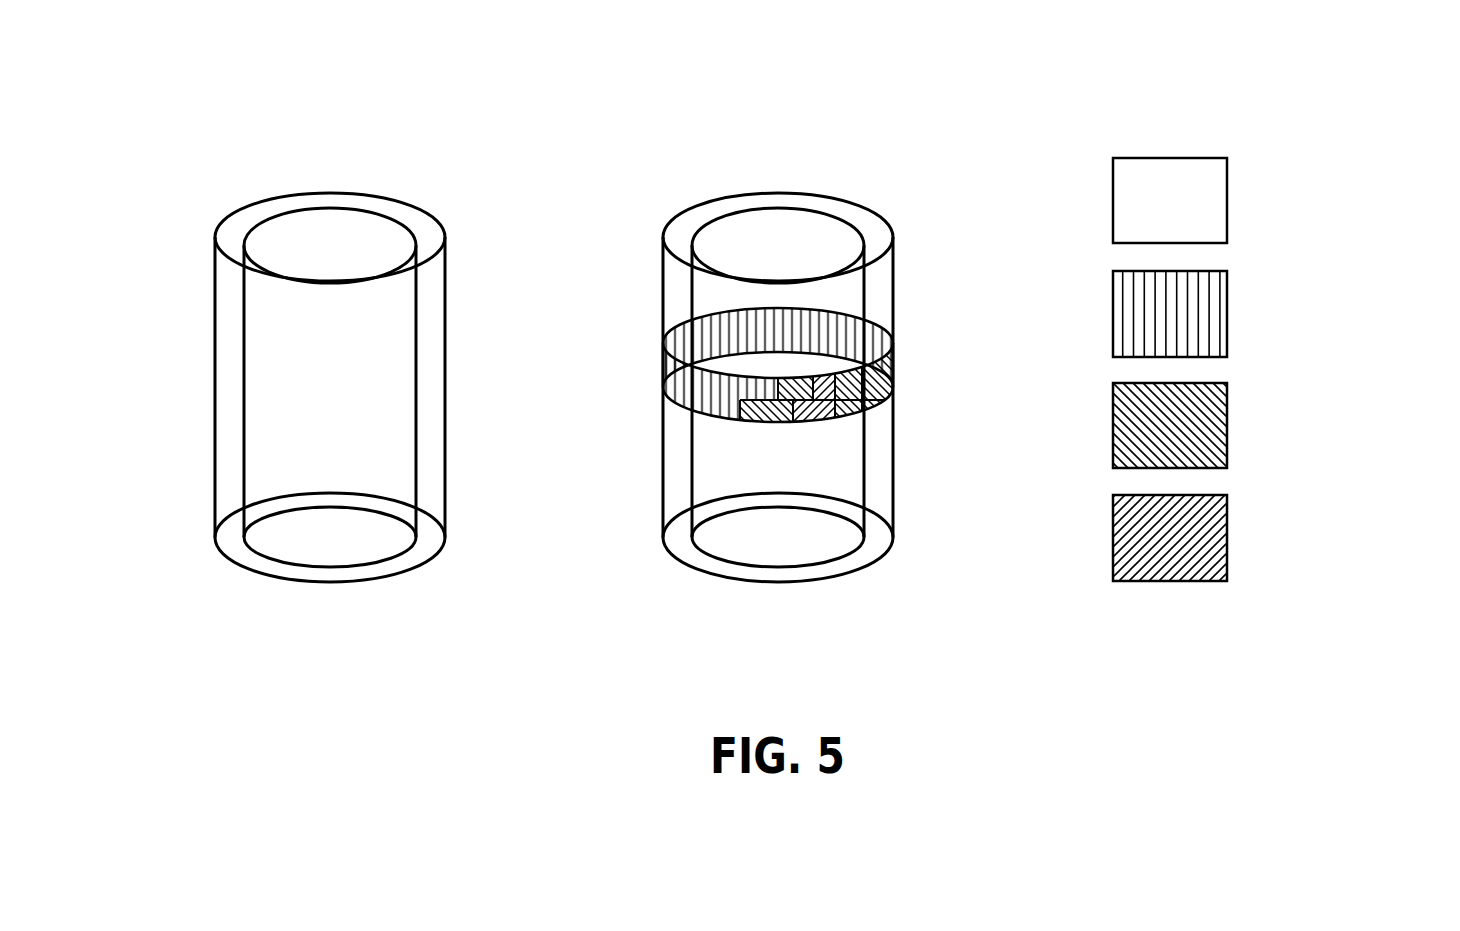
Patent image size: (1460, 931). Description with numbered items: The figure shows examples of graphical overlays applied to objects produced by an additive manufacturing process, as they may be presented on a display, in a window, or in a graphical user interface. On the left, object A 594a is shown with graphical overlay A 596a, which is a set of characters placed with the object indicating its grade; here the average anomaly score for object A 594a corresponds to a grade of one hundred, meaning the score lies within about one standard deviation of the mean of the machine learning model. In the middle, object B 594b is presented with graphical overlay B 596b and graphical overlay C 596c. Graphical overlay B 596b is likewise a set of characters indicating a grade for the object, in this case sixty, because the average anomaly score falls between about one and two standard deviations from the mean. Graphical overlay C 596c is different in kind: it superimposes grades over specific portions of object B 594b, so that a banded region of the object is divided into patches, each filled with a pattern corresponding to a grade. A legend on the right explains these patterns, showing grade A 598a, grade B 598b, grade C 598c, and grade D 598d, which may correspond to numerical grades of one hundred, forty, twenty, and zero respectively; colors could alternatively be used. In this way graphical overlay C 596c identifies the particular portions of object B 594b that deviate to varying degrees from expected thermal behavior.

The object A 594a is at (441, 102).
The object B 594b is at (888, 102).
The graphical overlay A 596a is at (217, 197).
The graphical overlay B 596b is at (664, 197).
The graphical overlay C 596c is at (905, 418).
The grade A 598a is at (1227, 200).
The grade B 598b is at (1227, 307).
The grade C 598c is at (1227, 420).
The grade D 598d is at (1227, 532).